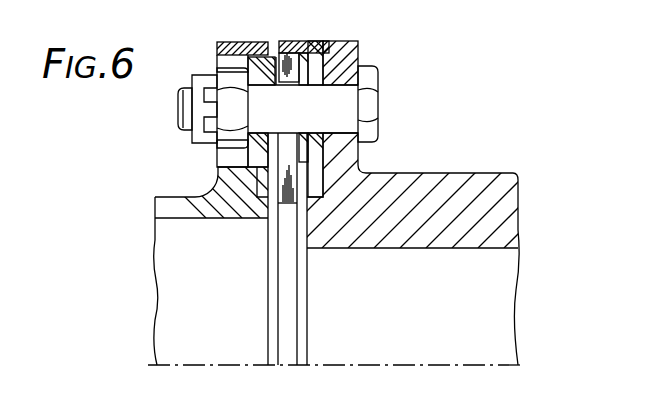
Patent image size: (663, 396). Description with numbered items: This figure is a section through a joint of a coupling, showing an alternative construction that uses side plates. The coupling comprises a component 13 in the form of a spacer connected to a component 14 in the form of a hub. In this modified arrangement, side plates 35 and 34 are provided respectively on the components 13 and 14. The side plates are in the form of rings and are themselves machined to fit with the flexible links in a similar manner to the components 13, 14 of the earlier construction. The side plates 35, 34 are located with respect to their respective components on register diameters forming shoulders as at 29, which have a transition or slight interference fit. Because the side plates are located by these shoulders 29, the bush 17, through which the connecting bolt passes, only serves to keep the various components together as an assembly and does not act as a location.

The component 13 is at (172, 205).
The component 14 is at (405, 186).
The bush 17 is at (360, 53).
The shoulders 29 is at (258, 208).
The side plate 34 is at (293, 42).
The side plate 35 is at (263, 50).